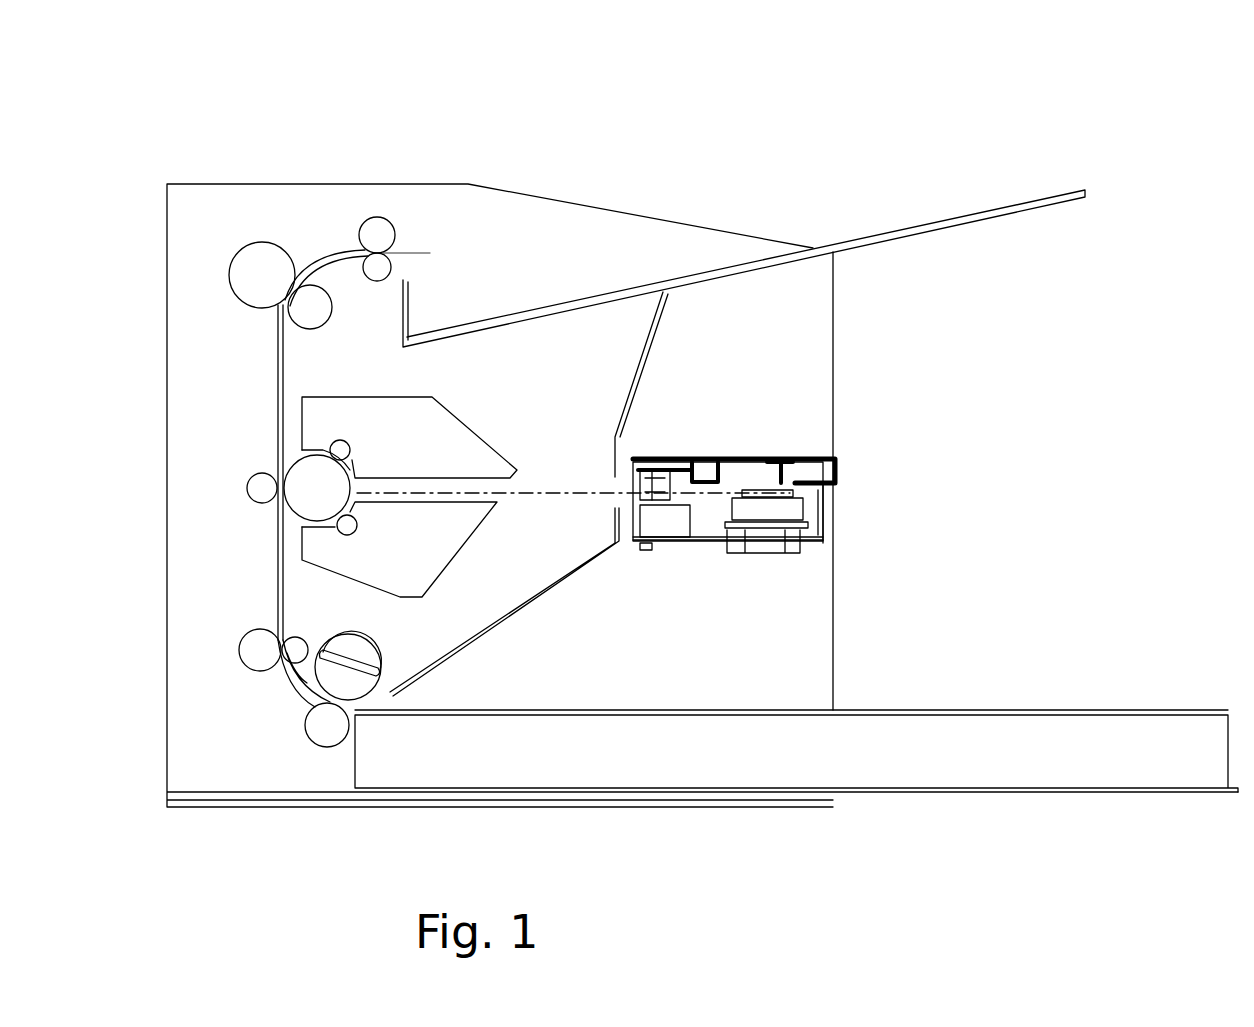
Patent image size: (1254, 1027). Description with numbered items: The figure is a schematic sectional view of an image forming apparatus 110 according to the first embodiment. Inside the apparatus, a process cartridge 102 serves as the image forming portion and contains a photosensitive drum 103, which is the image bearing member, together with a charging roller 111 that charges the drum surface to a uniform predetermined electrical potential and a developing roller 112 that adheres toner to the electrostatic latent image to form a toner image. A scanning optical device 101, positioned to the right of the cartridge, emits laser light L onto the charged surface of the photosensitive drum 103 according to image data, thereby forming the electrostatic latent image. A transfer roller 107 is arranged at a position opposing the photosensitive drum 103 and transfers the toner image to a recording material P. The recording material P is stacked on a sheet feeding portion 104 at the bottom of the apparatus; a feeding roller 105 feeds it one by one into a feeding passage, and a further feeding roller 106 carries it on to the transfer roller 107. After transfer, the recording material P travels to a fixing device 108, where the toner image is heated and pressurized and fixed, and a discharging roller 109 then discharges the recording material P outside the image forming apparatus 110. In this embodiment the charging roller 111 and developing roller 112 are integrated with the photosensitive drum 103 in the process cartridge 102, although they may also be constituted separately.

The scanning optical device 101 is at (823, 455).
The process cartridge 102 is at (503, 450).
The photosensitive drum 103 is at (318, 465).
The sheet feeding portion 104 is at (880, 795).
The feeding roller 105 is at (362, 672).
The feeding roller 106 is at (255, 657).
The transfer roller 107 is at (258, 492).
The fixing device 108 is at (283, 243).
The discharging roller 109 is at (388, 230).
The image forming apparatus 110 is at (192, 184).
The charging roller 111 is at (349, 447).
The developing roller 112 is at (358, 532).
The laser light L is at (553, 492).
The recording material P is at (1060, 733).